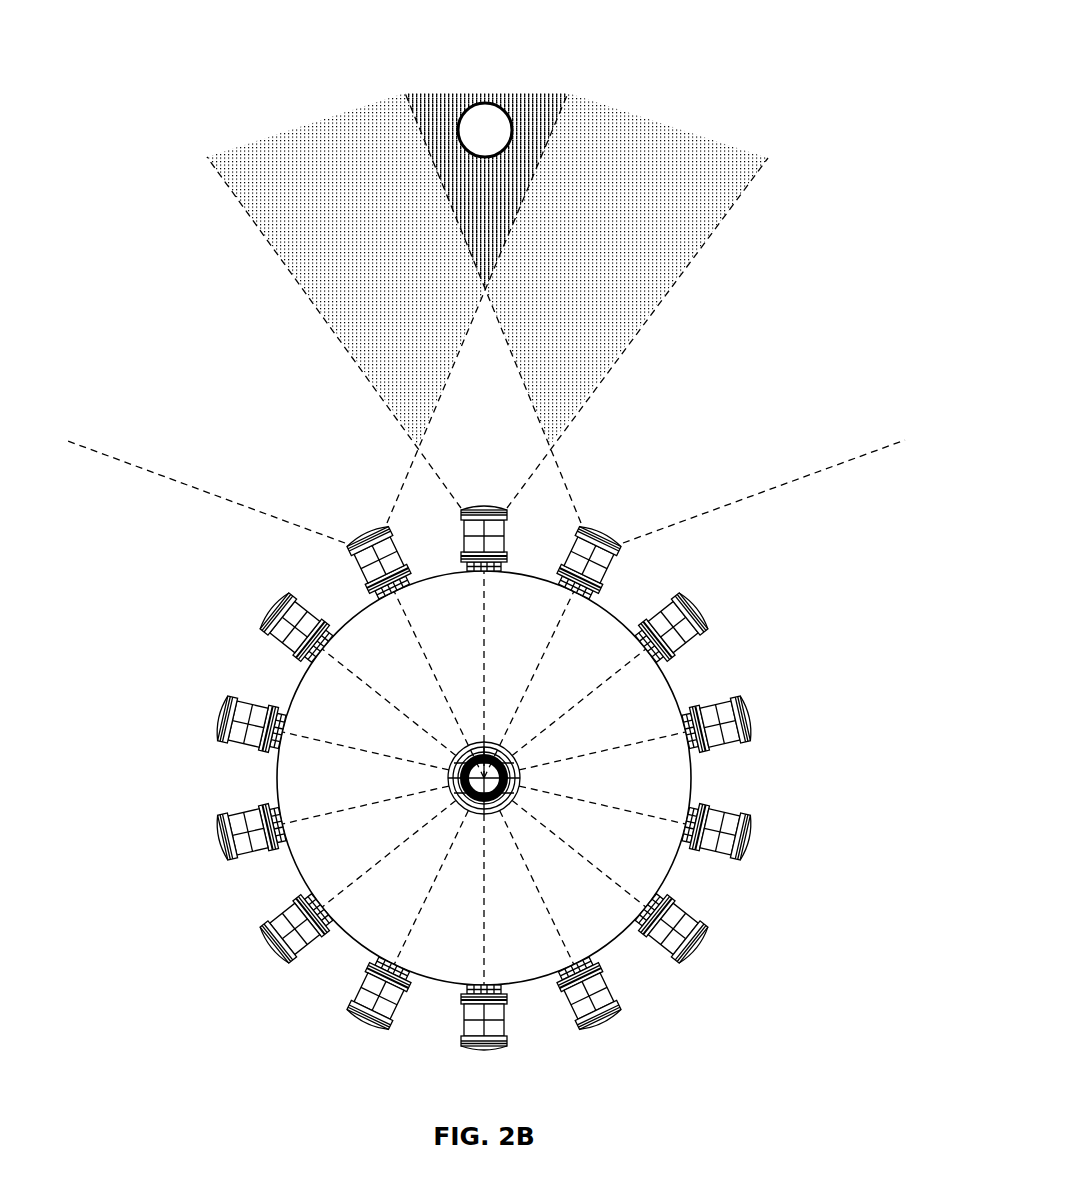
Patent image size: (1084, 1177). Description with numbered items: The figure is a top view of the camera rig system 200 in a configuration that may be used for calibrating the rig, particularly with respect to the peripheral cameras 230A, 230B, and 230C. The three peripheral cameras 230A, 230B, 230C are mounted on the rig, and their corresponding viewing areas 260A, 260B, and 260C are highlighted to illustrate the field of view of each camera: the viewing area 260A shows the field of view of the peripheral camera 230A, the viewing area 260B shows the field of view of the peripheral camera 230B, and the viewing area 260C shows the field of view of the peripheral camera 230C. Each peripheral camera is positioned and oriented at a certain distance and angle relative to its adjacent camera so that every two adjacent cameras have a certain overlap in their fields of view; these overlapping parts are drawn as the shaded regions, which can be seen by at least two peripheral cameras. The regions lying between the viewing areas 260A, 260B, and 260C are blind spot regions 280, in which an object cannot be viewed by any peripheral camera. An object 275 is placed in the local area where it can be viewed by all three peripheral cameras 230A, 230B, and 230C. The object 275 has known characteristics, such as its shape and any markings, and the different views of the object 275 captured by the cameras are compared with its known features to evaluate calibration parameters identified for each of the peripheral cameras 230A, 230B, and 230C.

The camera rig system 200 is at (94, 113).
The peripheral camera 230A is at (338, 550).
The peripheral camera 230B is at (522, 527).
The peripheral camera 230C is at (620, 575).
The viewing area 260A is at (198, 433).
The viewing area 260B is at (303, 194).
The viewing area 260C is at (743, 371).
The object 275 is at (467, 96).
The blind spot regions 280 is at (486, 297).